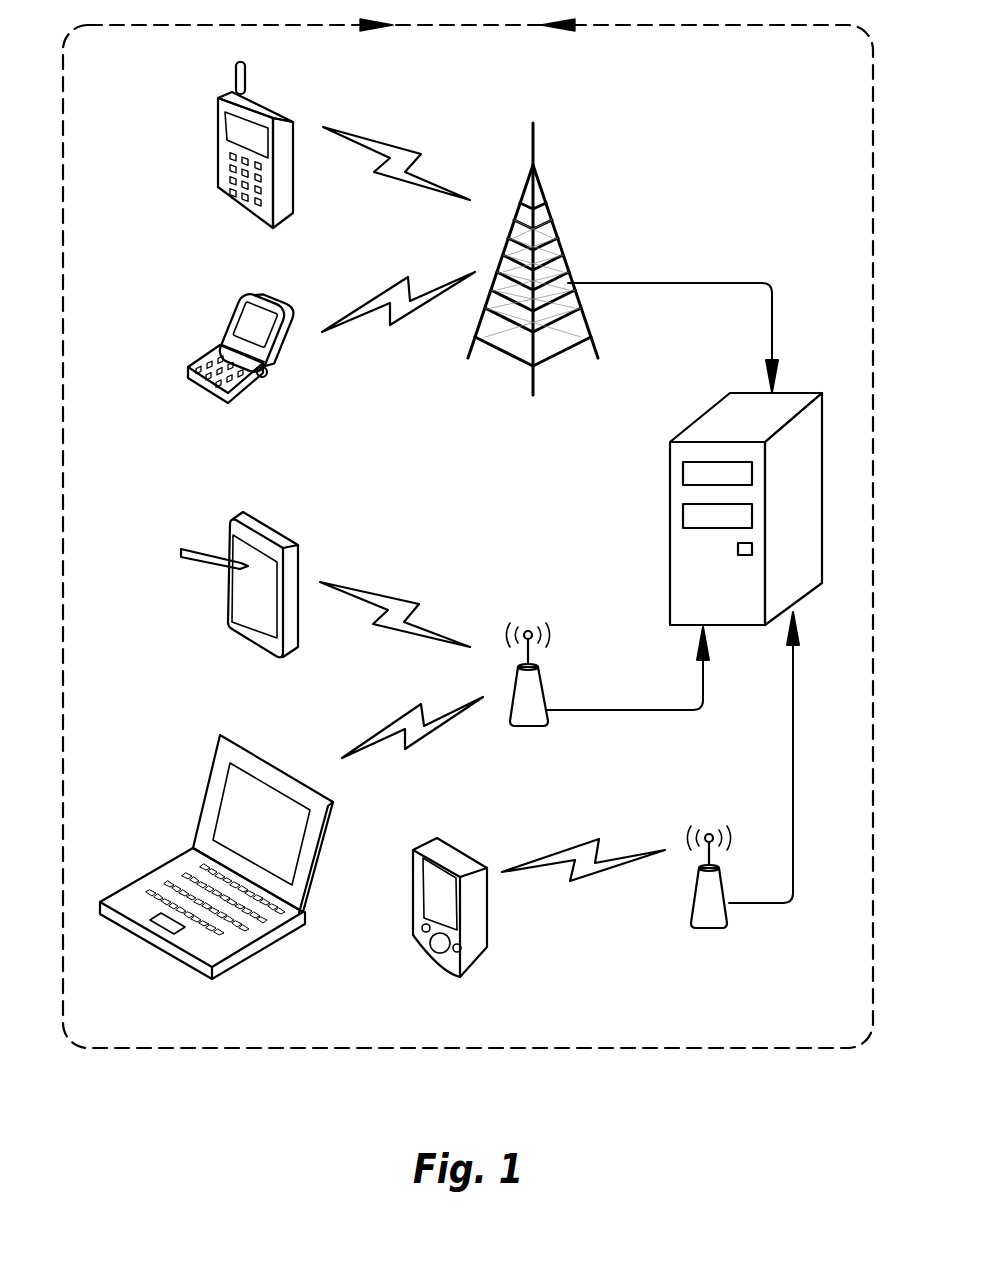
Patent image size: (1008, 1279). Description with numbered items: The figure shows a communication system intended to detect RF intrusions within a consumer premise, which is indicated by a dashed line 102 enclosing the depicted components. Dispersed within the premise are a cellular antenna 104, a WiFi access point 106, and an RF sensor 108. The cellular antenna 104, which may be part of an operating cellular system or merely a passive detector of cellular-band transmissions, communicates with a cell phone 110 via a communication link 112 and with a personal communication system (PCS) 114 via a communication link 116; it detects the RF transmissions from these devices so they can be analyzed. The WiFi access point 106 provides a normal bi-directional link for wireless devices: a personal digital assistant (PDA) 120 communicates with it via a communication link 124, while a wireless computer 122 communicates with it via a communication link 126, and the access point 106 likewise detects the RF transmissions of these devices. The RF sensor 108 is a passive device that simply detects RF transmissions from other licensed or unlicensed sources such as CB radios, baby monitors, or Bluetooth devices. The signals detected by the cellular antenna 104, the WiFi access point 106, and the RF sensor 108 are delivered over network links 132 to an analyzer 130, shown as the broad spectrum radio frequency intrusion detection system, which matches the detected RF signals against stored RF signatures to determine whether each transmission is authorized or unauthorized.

The dashed line (consumer premise) 102 is at (185, 1112).
The cellular antenna 104 is at (548, 215).
The WiFi access point 106 is at (543, 683).
The RF sensor 108 is at (692, 903).
The cell phone 110 is at (240, 400).
The communication link 112 is at (365, 292).
The personal communication system (PCS) 114 is at (217, 121).
The communication link 116 is at (403, 148).
The personal digital assistant (PDA) 120 is at (228, 614).
The wireless computer 122 is at (210, 777).
The communication link 124 is at (403, 598).
The communication link 126 is at (365, 740).
The analyzer 130 is at (692, 405).
The network links 132 is at (712, 281).